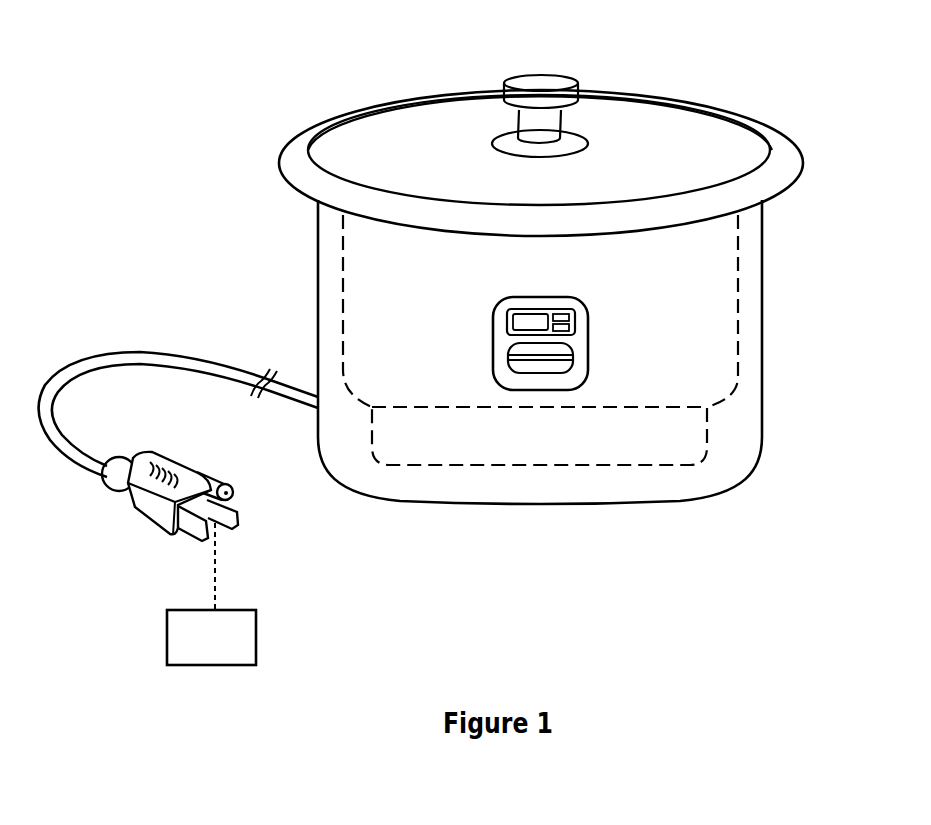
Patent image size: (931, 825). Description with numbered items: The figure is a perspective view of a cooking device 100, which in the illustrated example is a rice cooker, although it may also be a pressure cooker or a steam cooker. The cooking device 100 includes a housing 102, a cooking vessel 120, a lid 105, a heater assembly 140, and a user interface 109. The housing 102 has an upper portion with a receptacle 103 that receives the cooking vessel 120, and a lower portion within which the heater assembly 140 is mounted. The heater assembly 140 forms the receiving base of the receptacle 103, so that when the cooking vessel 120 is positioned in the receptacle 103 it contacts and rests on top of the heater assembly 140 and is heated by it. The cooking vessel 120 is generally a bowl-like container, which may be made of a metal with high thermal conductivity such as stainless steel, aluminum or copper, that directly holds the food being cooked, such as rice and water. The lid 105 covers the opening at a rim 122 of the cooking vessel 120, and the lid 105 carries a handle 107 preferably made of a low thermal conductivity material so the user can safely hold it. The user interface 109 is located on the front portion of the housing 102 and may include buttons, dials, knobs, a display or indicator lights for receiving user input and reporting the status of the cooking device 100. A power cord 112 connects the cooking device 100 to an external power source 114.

The cooking device 100 is at (758, 60).
The housing 102 is at (762, 262).
The receptacle 103 is at (740, 309).
The lid 105 is at (640, 122).
The handle 107 is at (552, 75).
The user interface 109 is at (588, 325).
The power cord 112 is at (145, 528).
The external power source 114 is at (167, 637).
The cooking vessel 120 is at (282, 172).
The rim 122 is at (313, 152).
The heater assembly 140 is at (707, 416).